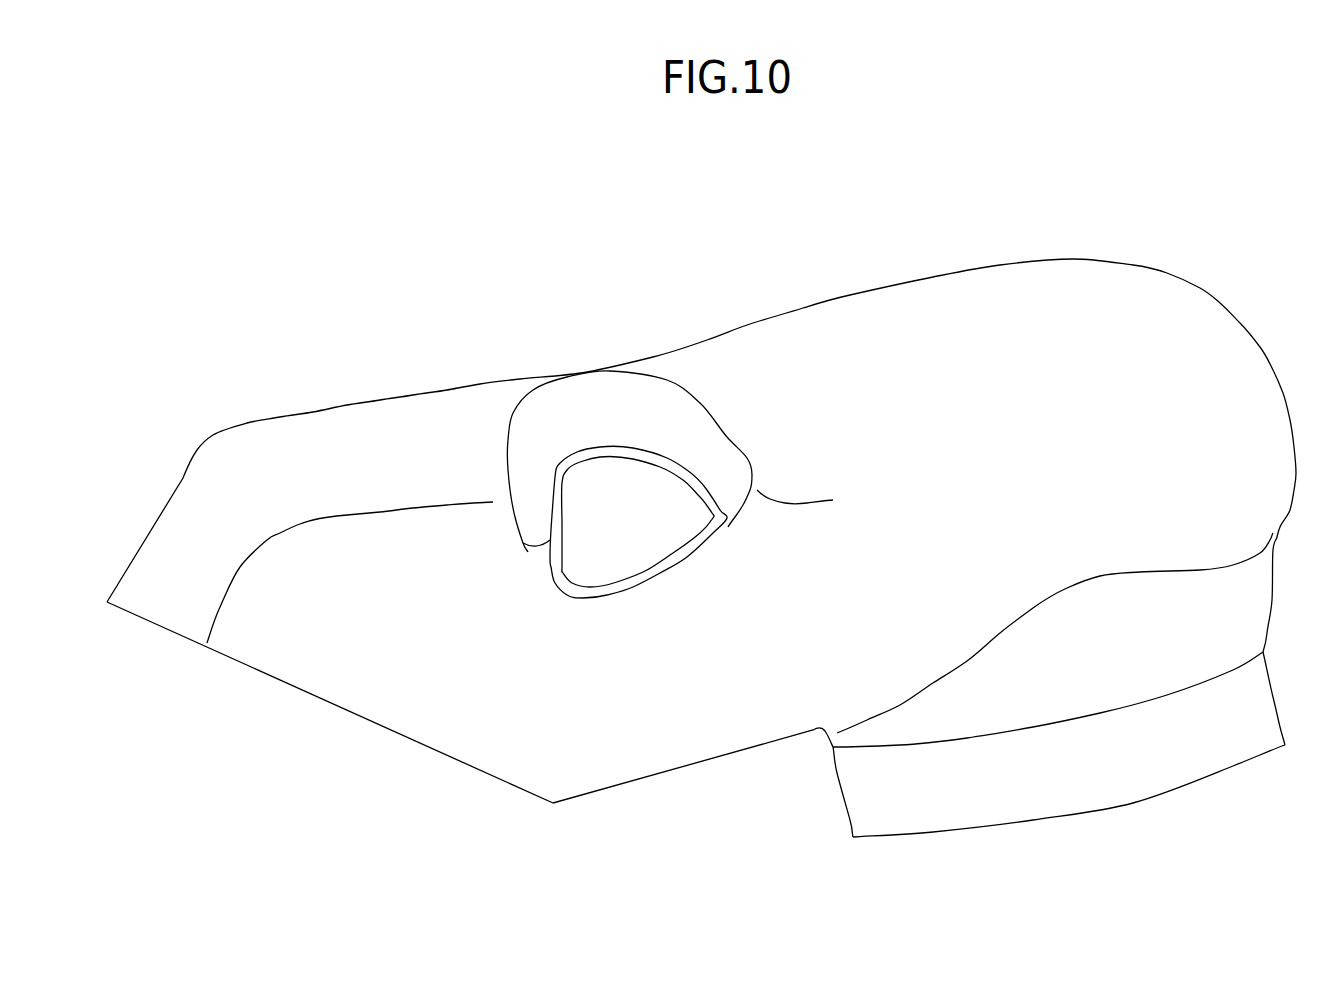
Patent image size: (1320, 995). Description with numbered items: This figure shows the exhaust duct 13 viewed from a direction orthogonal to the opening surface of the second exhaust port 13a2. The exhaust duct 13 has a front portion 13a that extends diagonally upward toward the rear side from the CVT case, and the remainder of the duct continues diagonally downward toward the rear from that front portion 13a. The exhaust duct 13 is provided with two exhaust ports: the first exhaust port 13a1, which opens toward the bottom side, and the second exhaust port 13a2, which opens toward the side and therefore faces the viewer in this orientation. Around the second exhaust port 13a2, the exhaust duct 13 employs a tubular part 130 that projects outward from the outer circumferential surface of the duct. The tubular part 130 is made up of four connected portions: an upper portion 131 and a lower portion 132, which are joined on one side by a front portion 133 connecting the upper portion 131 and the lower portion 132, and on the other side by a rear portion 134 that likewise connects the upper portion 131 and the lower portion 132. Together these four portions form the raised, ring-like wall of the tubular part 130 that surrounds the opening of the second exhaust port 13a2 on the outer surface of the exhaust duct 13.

The exhaust duct 13 is at (316, 405).
The front portion 13a is at (470, 410).
The first exhaust port 13a1 is at (403, 736).
The second exhaust port 13a2 is at (635, 573).
The tubular part 130 is at (674, 407).
The upper portion 131 is at (607, 448).
The lower portion 132 is at (613, 598).
The front portion 133 is at (707, 486).
The rear portion 134 is at (550, 540).